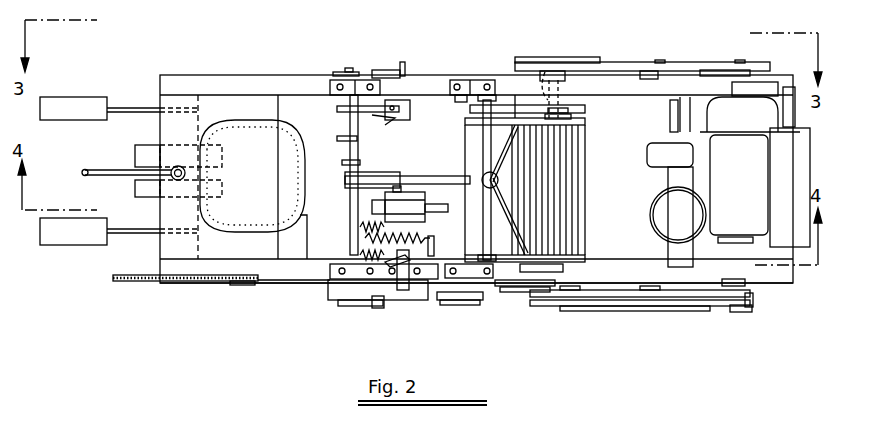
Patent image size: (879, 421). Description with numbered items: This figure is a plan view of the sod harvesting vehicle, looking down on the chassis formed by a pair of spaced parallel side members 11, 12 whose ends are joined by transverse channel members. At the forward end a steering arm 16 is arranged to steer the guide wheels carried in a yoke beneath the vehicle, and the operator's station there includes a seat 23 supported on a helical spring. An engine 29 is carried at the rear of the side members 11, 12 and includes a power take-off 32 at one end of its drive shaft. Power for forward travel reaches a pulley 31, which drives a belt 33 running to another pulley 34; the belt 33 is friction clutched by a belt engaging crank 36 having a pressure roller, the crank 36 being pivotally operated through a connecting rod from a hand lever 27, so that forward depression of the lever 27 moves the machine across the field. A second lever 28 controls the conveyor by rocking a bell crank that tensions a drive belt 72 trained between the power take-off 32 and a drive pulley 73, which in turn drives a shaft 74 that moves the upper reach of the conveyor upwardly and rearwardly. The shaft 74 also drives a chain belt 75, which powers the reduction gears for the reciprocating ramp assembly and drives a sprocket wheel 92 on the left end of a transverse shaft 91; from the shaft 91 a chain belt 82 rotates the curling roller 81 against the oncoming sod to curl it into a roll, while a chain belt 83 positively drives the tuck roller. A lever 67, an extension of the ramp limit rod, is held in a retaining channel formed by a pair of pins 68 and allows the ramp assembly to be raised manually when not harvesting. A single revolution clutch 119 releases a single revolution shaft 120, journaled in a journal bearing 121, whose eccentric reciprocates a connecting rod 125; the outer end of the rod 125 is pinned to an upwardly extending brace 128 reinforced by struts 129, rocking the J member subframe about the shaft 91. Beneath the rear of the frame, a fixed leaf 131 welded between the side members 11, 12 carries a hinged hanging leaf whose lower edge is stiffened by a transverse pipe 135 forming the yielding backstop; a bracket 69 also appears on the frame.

The side member 11 is at (278, 285).
The side member 12 is at (245, 75).
The steering arm 16 is at (92, 170).
The seat 23 is at (262, 185).
The hand lever 27 is at (120, 283).
The lever 28 is at (340, 72).
The engine 29 is at (765, 248).
The pulley 31 is at (738, 312).
The power take-off 32 is at (785, 78).
The belt 33 is at (660, 306).
The pulley 34 is at (565, 306).
The belt engaging crank 36 is at (713, 286).
The lever 67 is at (382, 70).
The pins 68 is at (409, 45).
The bracket 69 is at (492, 80).
The drive belt 72 is at (638, 62).
The drive pulley 73 is at (585, 57).
The shaft 74 is at (548, 72).
The chain belt 75 is at (508, 292).
The curling roller 81 is at (565, 170).
The chain belt 82 is at (570, 112).
The chain belt 83 is at (527, 275).
The shaft 91 is at (467, 224).
The sprocket wheel 92 is at (470, 280).
The single revolution clutch 119 is at (345, 300).
The single revolution shaft 120 is at (352, 148).
The journal bearing 121 is at (340, 279).
The connecting rod 125 is at (427, 177).
The brace 128 is at (495, 175).
The struts 129 is at (520, 215).
The leaf 131 is at (673, 178).
The pipe 135 is at (668, 258).